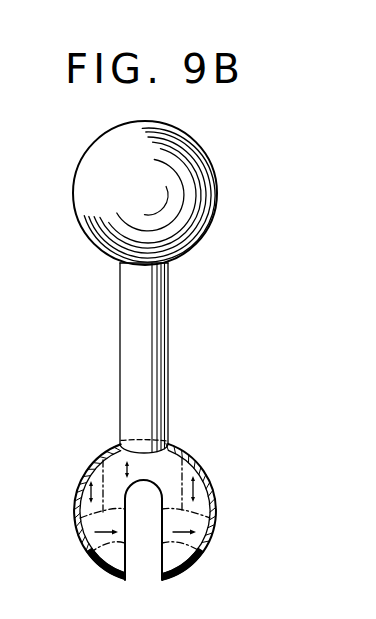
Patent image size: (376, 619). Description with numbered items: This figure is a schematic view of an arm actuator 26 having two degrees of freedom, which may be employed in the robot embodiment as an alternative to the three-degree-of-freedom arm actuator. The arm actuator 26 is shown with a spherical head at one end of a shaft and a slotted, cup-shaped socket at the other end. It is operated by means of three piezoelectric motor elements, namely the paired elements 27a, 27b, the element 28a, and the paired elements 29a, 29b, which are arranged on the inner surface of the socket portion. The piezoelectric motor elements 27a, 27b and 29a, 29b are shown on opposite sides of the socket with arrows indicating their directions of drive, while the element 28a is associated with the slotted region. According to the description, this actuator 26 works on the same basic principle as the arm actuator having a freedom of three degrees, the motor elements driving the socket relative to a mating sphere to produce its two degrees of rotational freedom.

The arm actuator 26 is at (166, 326).
The piezoelectric motor element 27a is at (216, 494).
The piezoelectric motor element 27b is at (93, 467).
The piezoelectric motor element 28a is at (186, 498).
The piezoelectric motor element 29a is at (204, 550).
The piezoelectric motor element 29b is at (93, 525).